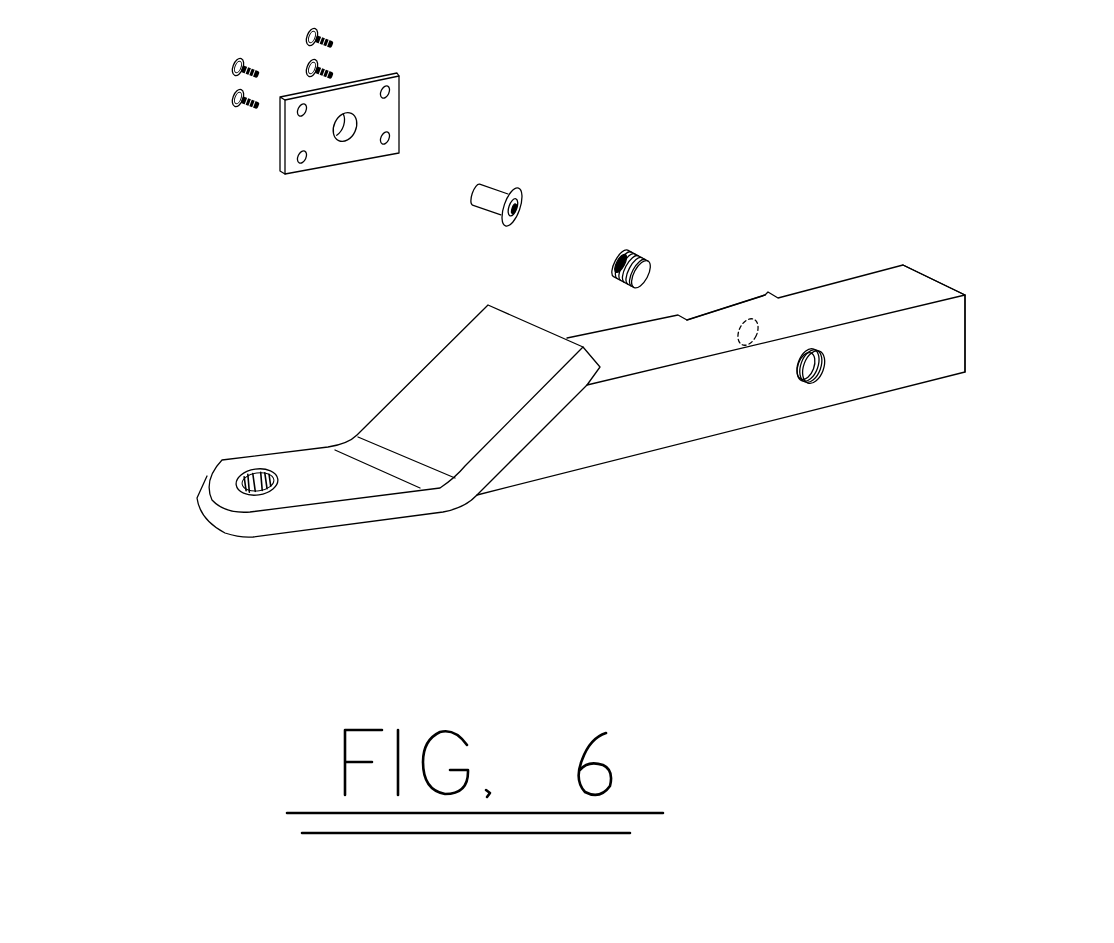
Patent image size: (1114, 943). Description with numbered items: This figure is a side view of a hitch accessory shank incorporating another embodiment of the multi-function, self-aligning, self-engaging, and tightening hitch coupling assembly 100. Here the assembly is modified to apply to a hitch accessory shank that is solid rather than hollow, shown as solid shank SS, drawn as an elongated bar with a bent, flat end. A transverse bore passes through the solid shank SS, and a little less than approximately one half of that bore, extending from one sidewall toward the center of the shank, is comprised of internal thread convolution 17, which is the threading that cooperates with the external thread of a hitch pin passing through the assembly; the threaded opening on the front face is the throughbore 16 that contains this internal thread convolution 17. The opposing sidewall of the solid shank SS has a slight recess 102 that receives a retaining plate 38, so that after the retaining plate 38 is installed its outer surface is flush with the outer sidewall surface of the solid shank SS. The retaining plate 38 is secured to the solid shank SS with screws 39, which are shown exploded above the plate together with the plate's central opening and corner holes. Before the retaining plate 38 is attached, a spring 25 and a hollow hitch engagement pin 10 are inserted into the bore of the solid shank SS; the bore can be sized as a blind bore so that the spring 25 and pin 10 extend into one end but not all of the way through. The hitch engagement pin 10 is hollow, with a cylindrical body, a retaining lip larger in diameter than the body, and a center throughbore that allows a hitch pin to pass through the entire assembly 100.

The hitch coupling assembly 100 is at (673, 510).
The recess 102 is at (708, 313).
The solid shank SS is at (965, 348).
The throughbore 16 is at (822, 372).
The internal thread convolution 17 is at (795, 377).
The retaining plate 38 is at (403, 107).
The screws 39 is at (240, 108).
The hitch engagement pin 10 is at (488, 188).
The spring 25 is at (643, 253).